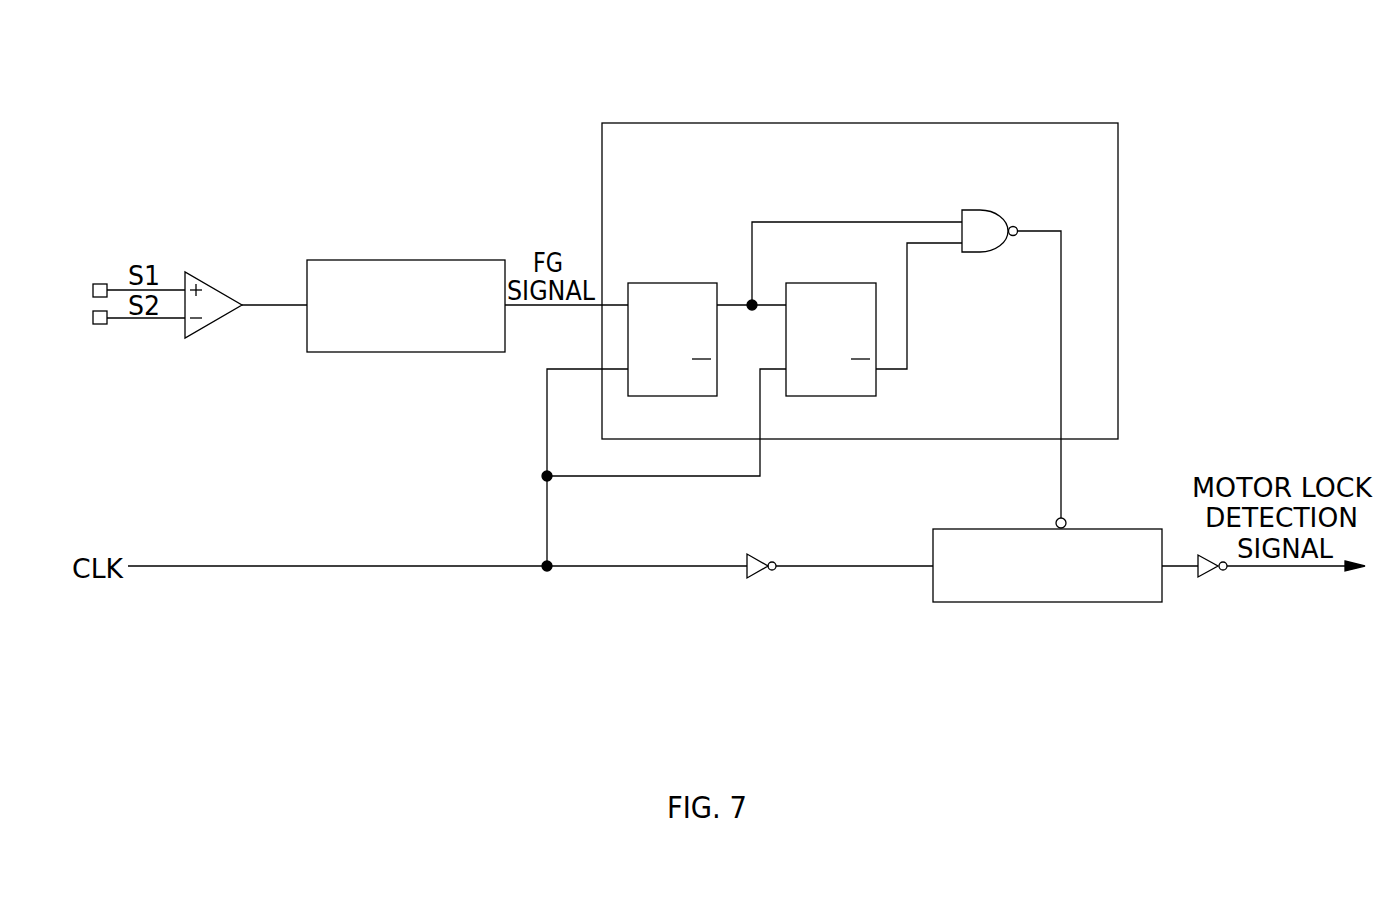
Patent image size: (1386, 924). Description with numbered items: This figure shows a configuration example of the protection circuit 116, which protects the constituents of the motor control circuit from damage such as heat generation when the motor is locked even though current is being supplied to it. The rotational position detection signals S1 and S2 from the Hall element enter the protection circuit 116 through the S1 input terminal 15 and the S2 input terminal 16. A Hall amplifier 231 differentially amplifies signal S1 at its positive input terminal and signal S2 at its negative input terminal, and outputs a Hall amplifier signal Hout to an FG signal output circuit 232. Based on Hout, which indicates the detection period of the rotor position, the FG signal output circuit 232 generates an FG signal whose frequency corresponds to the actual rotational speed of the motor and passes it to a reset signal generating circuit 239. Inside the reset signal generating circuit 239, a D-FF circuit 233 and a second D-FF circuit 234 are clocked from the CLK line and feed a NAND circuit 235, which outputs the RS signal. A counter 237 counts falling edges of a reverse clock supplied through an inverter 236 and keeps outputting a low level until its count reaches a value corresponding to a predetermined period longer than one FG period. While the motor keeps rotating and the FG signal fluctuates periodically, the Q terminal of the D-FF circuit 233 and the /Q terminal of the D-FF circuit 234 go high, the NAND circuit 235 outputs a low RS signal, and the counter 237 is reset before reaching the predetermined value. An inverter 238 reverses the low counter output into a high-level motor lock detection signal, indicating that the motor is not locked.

The S1 input terminal 15 is at (93, 290).
The S2 input terminal 16 is at (93, 318).
The protection circuit 116 is at (877, 272).
The Hall amplifier 231 is at (215, 288).
The FG signal output circuit 232 is at (408, 260).
The D-FF circuit 233 is at (662, 283).
The D-FF circuit 234 is at (820, 283).
The NAND circuit 235 is at (985, 210).
The inverter 236 is at (760, 578).
The counter 237 is at (1052, 602).
The inverter 238 is at (1210, 577).
The reset signal generating circuit 239 is at (1118, 265).